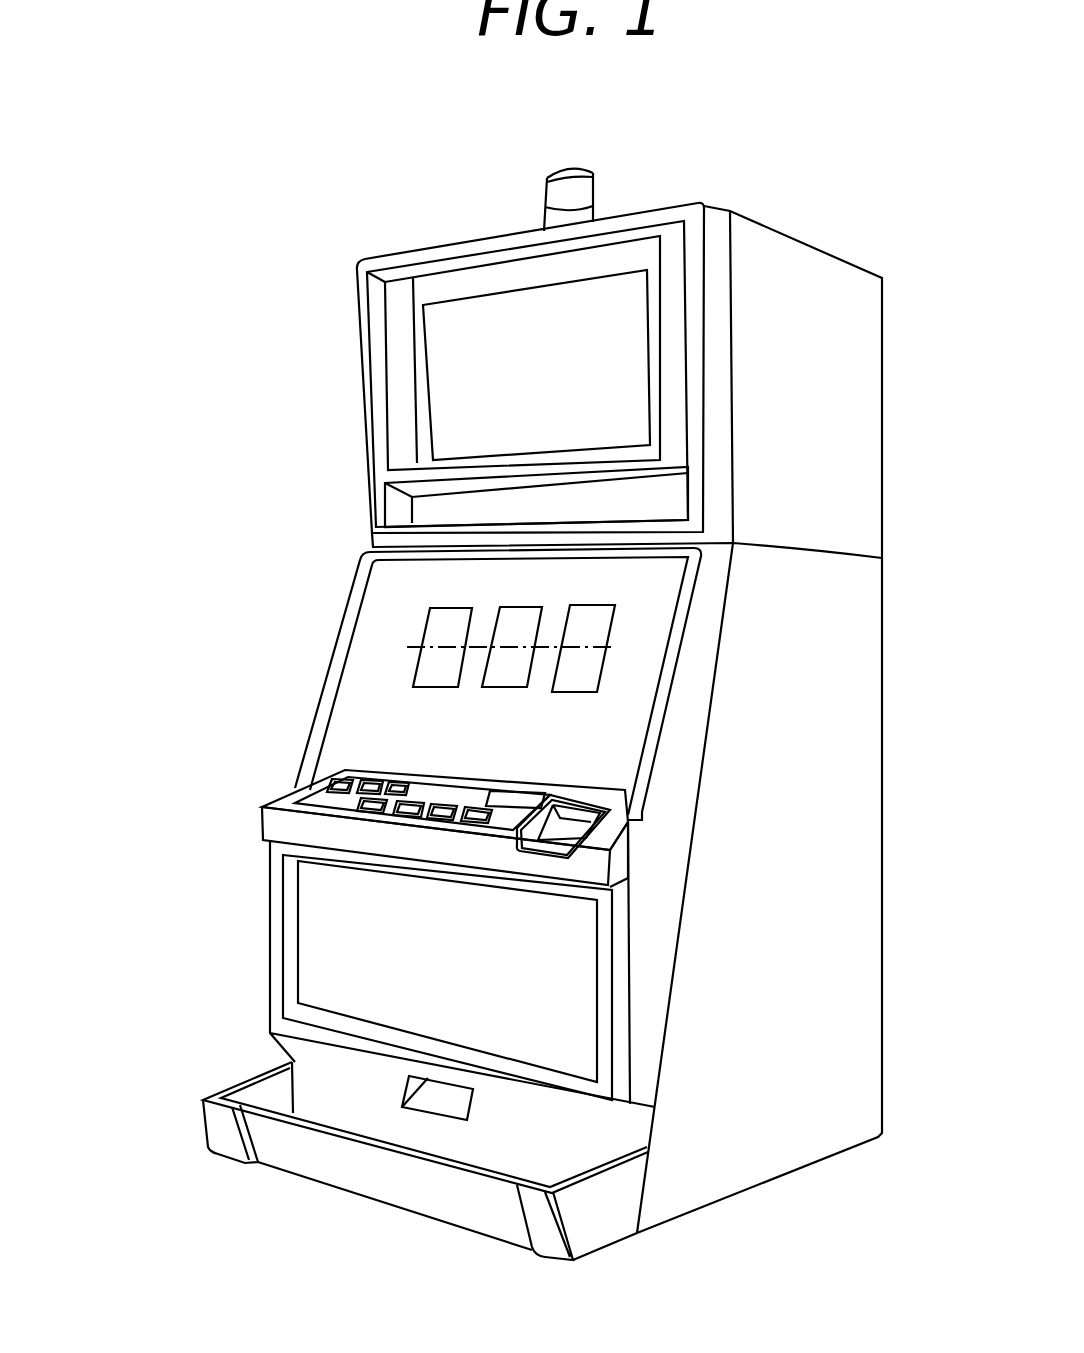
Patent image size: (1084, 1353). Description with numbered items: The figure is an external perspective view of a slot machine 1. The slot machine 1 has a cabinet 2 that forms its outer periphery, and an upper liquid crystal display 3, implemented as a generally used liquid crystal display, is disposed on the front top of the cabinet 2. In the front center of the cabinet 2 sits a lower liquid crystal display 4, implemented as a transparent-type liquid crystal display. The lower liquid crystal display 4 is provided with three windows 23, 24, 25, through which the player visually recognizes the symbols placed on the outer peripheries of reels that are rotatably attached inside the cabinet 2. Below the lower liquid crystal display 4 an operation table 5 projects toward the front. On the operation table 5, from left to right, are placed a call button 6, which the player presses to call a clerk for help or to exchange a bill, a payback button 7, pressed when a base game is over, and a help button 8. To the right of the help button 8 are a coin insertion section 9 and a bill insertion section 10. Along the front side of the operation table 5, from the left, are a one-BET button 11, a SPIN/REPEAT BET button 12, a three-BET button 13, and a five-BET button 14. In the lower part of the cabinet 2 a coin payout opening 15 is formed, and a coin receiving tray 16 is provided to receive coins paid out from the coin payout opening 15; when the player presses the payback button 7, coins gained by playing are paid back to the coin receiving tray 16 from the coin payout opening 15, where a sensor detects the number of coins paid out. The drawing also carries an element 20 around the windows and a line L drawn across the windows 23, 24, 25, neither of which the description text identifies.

The slot machine 1 is at (345, 198).
The cabinet 2 is at (325, 600).
The upper liquid crystal display 3 is at (545, 380).
The lower liquid crystal display 4 is at (517, 730).
The operation table 5 is at (551, 795).
The call button 6 is at (350, 778).
The payback button 7 is at (376, 781).
The help button 8 is at (402, 782).
The coin insertion section 9 is at (510, 792).
The bill insertion section 10 is at (542, 838).
The 1-BET button 11 is at (359, 812).
The SPIN/REPEAT BET button 12 is at (391, 815).
The 3-BET button 13 is at (430, 818).
The 5-BET button 14 is at (472, 822).
The coin payout opening 15 is at (440, 1102).
The coin receiving tray 16 is at (467, 1202).
The front panel 20 is at (308, 757).
The window 23 is at (430, 630).
The window 24 is at (517, 618).
The window 25 is at (585, 615).
The pay line L is at (407, 647).